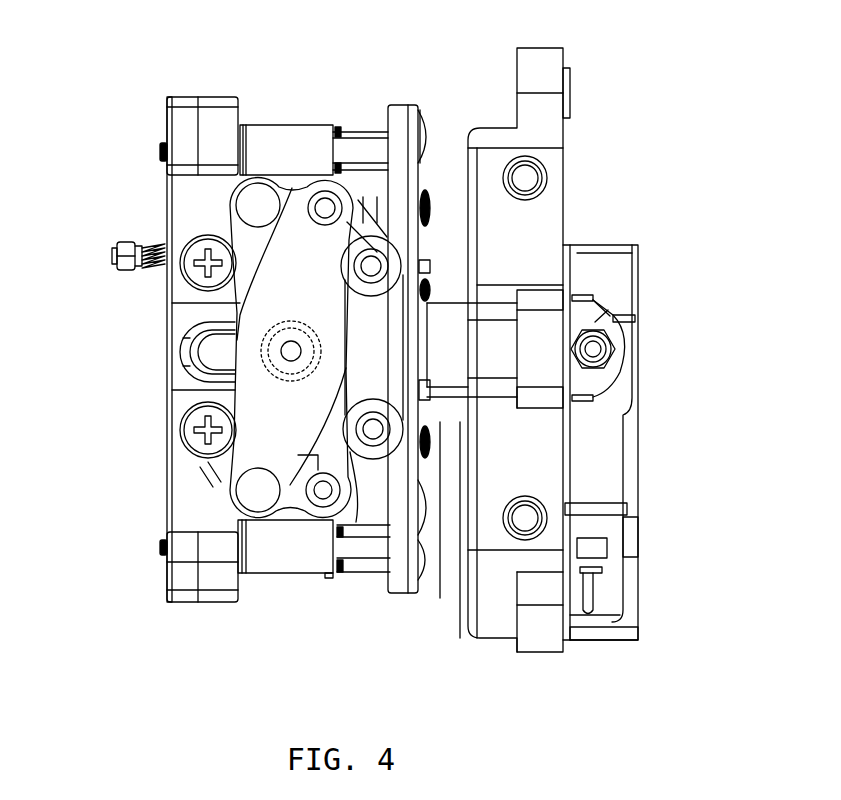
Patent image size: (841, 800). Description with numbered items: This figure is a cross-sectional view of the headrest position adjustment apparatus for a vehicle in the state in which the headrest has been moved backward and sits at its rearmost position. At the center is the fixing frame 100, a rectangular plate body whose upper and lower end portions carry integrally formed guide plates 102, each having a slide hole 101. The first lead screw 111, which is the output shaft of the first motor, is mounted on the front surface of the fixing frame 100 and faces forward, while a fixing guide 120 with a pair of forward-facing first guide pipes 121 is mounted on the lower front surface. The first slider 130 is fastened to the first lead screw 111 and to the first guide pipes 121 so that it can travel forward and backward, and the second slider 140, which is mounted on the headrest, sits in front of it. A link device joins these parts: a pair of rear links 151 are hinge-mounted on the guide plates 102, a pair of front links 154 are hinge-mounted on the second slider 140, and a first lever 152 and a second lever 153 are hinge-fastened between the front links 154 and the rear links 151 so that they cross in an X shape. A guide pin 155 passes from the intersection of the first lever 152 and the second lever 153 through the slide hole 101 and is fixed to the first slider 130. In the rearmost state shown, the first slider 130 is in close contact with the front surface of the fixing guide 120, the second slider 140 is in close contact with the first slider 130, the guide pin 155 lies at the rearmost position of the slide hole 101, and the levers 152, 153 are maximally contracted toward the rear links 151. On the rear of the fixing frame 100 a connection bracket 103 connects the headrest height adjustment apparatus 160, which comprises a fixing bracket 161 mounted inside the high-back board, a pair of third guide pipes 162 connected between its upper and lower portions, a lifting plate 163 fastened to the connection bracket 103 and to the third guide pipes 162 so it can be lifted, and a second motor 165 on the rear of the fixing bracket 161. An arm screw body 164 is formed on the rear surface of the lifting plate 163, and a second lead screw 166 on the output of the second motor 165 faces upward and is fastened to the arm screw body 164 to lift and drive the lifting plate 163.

The fixing frame 100 is at (406, 95).
The slide hole 101 is at (210, 340).
The guide plate 102 is at (179, 355).
The connection bracket 103 is at (446, 302).
The first lead screw 111 is at (145, 275).
The fixing guide 120 is at (370, 112).
The first guide pipe 121 is at (162, 150).
The first slider 130 is at (272, 122).
The second slider 140 is at (220, 93).
The rear link 151 is at (382, 240).
The first lever 152 is at (258, 430).
The second lever 153 is at (313, 465).
The front link 154 is at (218, 223).
The guide pin 155 is at (288, 352).
The headrest height adjustment apparatus 160 is at (604, 131).
The fixing bracket 161 is at (573, 193).
The third guide pipe 162 is at (527, 178).
The lifting plate 163 is at (597, 287).
The arm screw body 164 is at (593, 320).
The second motor 165 is at (600, 456).
The second lead screw 166 is at (608, 351).